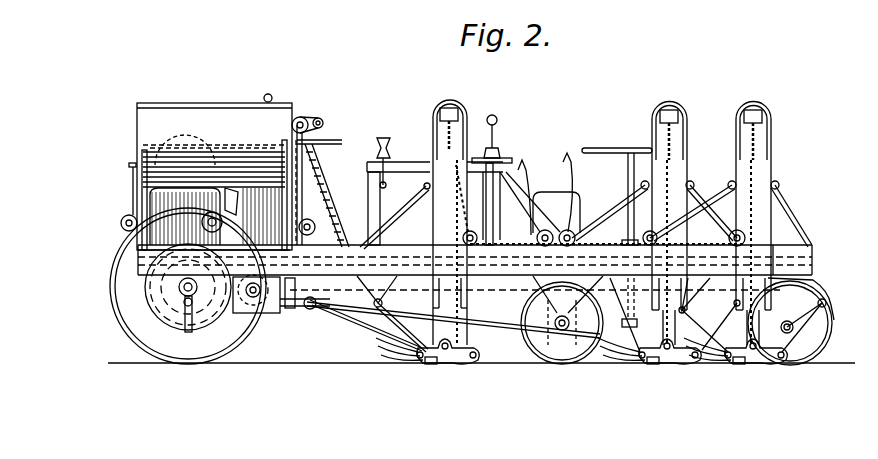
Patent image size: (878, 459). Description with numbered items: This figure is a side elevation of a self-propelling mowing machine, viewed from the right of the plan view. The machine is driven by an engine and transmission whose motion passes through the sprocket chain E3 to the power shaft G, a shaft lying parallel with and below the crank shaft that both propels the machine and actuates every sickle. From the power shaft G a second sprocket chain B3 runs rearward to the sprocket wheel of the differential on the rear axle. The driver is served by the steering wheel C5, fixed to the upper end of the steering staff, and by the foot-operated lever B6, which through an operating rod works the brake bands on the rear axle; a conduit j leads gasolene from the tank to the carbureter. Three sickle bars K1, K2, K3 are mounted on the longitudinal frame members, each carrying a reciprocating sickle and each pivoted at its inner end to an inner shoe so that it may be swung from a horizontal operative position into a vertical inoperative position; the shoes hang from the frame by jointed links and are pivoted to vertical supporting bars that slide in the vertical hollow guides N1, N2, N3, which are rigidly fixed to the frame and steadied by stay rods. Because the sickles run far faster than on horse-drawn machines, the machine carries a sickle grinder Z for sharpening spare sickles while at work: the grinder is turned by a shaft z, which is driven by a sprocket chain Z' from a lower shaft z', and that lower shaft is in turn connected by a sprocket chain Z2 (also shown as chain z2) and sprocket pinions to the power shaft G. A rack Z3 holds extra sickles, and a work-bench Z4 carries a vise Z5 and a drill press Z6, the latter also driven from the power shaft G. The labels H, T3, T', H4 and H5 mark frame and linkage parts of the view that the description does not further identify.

The engine housing H is at (262, 205).
The sprocket chain Z2 is at (235, 165).
The lower shaft z' is at (214, 118).
The sprocket chain Z' is at (281, 192).
The shaft z is at (314, 157).
The sickle grinder Z is at (332, 119).
The rack Z3 is at (330, 136).
The work-bench Z4 is at (409, 160).
The vise Z5 is at (384, 135).
The drill press Z6 is at (500, 125).
The vertical hollow guide N3 is at (462, 140).
The vertical hollow guide N2 is at (677, 163).
The vertical hollow guide N1 is at (758, 172).
The power shaft G is at (233, 217).
The conduit j is at (130, 203).
The sprocket chain E3 is at (257, 240).
The sprocket chain z2 is at (250, 312).
The sprocket chain B3 is at (212, 316).
The tie bar T3 is at (350, 312).
The tie rod T' is at (453, 316).
The sickle bar K3 is at (440, 362).
The sickle bar K2 is at (668, 362).
The sickle bar K1 is at (758, 362).
The brace H4 is at (690, 179).
The brace H5 is at (612, 204).
The steering wheel C5 is at (636, 166).
The foot-operated lever B6 is at (607, 230).